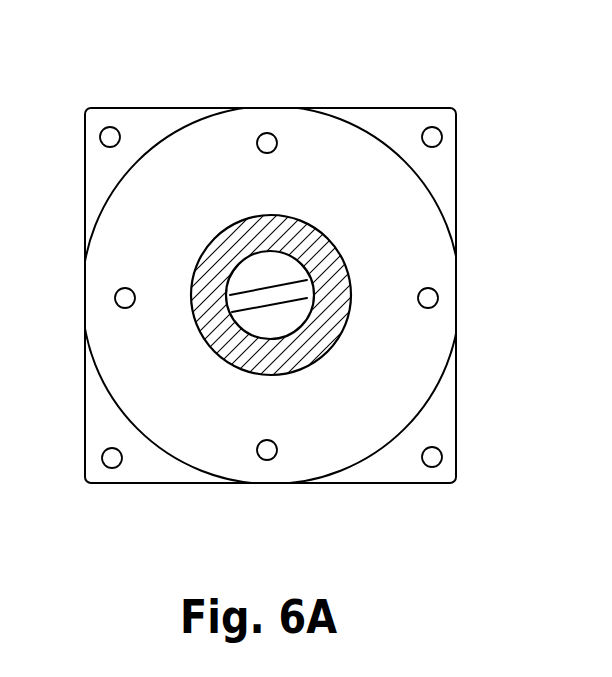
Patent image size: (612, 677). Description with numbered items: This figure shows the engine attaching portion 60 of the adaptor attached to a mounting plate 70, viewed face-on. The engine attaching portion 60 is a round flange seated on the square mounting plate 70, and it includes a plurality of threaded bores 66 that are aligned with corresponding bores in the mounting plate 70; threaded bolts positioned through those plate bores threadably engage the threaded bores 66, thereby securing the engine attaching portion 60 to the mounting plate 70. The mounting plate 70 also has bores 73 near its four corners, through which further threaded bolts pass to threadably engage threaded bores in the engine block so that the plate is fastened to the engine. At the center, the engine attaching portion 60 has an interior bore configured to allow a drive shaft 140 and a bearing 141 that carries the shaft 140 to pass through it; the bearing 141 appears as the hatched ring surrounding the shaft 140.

The mounting plate 70 is at (133, 108).
The engine attaching portion 60 is at (362, 137).
The threaded bores 66 is at (438, 298).
The bores 73 is at (115, 468).
The bearing 141 is at (192, 317).
The drive shaft 140 is at (303, 325).